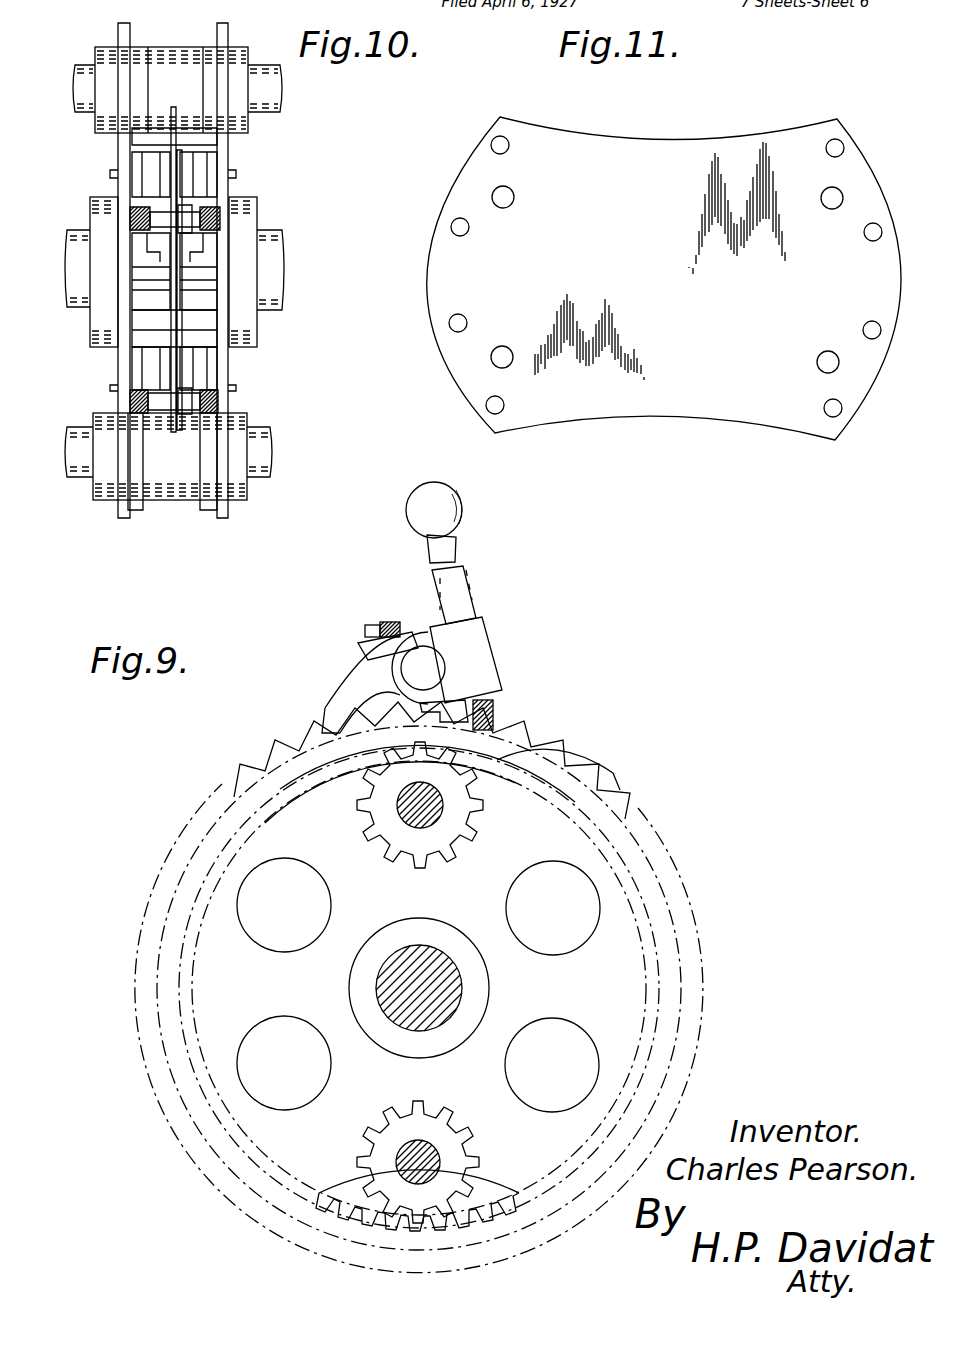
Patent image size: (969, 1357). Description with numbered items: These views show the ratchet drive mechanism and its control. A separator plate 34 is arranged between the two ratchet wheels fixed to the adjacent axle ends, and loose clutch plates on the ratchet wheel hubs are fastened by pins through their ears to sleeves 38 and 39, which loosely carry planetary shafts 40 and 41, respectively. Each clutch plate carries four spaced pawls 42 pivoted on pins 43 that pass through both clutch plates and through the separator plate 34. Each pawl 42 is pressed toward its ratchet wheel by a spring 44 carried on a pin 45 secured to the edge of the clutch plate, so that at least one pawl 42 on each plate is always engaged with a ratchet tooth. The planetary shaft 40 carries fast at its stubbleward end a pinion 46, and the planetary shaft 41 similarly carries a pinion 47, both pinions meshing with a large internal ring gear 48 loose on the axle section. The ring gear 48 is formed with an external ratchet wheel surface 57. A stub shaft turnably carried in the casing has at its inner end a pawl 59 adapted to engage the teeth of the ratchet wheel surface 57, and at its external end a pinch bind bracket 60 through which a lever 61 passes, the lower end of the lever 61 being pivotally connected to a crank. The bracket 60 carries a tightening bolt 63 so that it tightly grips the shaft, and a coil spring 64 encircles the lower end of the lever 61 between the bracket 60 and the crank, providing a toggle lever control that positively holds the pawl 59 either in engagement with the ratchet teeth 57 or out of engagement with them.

In FIG. 10, the separator plate 34 is at (175, 201).
In FIG. 11, the separator plate 34 is at (664, 278).
In FIG. 10, the sleeve 38 is at (198, 58).
In FIG. 10, the sleeve 39 is at (181, 496).
In FIG. 10, the planetary shaft 40 is at (278, 98).
In FIG. 9, the planetary shaft 40 is at (400, 820).
In FIG. 10, the planetary shaft 41 is at (264, 450).
In FIG. 9, the planetary shaft 41 is at (398, 1158).
In FIG. 10, the pawl 42 is at (190, 171).
In FIG. 10, the pin 43 is at (210, 333).
In FIG. 10, the spring 44 is at (218, 233).
In FIG. 10, the pin 45 is at (190, 213).
In FIG. 9, the pinion 46 is at (464, 818).
In FIG. 9, the pinion 47 is at (446, 1158).
In FIG. 9, the internal ring gear 48 is at (265, 779).
In FIG. 9, the ratchet wheel surface 57 is at (562, 743).
In FIG. 9, the pawl 59 is at (340, 702).
In FIG. 9, the pinch bind bracket 60 is at (486, 666).
In FIG. 9, the lever 61 is at (464, 590).
In FIG. 9, the tightening bolt 63 is at (367, 634).
In FIG. 9, the coil spring 64 is at (497, 721).